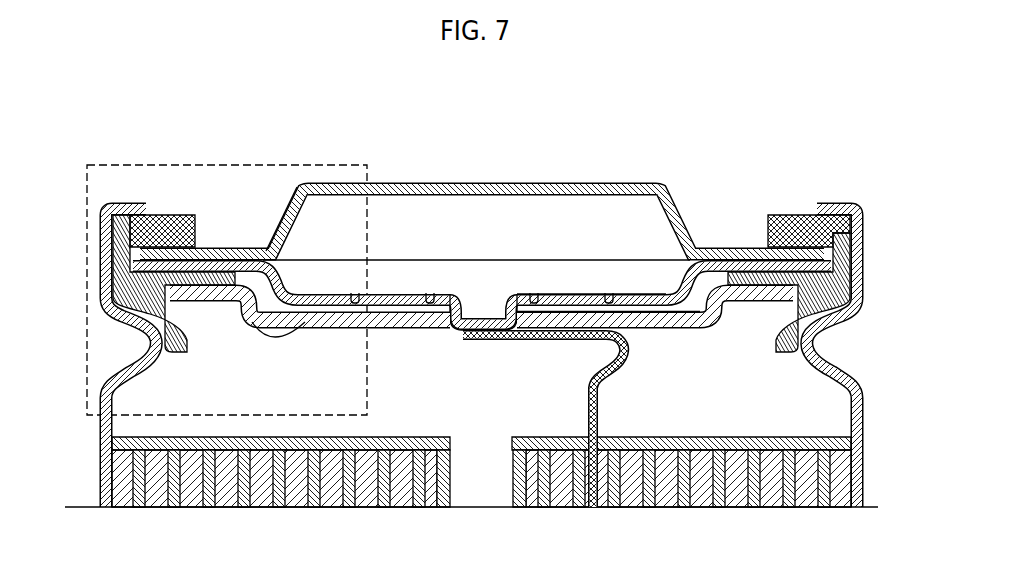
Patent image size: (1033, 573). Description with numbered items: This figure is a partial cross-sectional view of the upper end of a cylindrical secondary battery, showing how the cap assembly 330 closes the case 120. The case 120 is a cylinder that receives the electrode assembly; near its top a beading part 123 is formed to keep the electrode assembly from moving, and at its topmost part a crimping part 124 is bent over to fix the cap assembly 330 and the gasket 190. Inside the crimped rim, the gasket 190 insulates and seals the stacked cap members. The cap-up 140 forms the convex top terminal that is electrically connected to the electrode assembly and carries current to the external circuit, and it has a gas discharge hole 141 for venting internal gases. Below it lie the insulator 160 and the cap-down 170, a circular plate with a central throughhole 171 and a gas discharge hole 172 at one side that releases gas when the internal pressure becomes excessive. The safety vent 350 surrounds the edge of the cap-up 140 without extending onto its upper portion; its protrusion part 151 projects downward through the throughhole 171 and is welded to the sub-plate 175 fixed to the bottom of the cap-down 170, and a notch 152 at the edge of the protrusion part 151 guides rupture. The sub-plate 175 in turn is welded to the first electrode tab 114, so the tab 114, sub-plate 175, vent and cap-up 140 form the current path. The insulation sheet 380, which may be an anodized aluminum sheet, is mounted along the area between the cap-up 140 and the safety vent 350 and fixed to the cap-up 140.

The first electrode tab 114 is at (601, 400).
The case 120 is at (534, 327).
The beading part 123 is at (815, 339).
The crimping part 124 is at (840, 203).
The cap-up 140 is at (592, 189).
The gas discharge hole 141 is at (290, 218).
The protrusion part 151 is at (487, 316).
The notch 152 is at (356, 292).
The insulator 160 is at (750, 264).
The cap-down 170 is at (415, 312).
The throughhole 171 is at (553, 310).
The gas discharge hole 172 is at (239, 300).
The sub-plate 175 is at (380, 292).
The gasket 190 is at (840, 282).
The cap assembly 330 is at (705, 103).
The safety vent 350 is at (630, 318).
The insulation sheet 380 is at (171, 216).